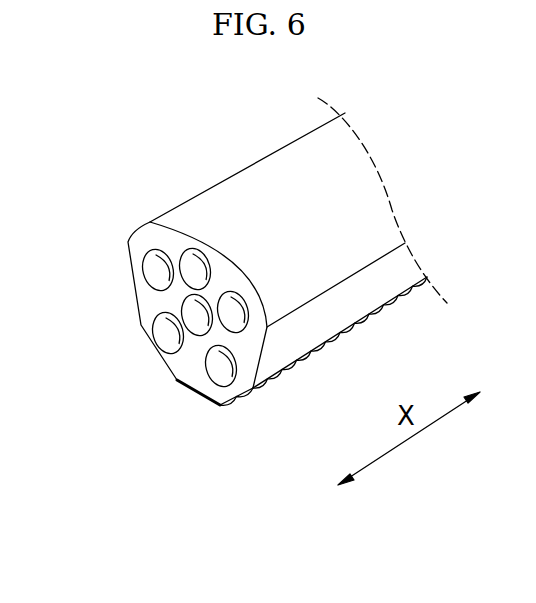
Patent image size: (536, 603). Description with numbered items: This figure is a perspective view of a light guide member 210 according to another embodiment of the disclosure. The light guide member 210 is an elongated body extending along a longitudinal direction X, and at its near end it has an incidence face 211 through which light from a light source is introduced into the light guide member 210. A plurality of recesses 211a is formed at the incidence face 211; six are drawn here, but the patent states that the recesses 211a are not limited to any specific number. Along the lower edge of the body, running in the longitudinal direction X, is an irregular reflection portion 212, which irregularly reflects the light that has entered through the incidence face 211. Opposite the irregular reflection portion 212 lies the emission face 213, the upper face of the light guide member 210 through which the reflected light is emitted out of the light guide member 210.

The light guide member 210 is at (242, 277).
The incidence face 211 is at (142, 303).
The recesses 211a is at (148, 270).
The irregular reflection portion 212 is at (280, 380).
The emission face 213 is at (257, 172).